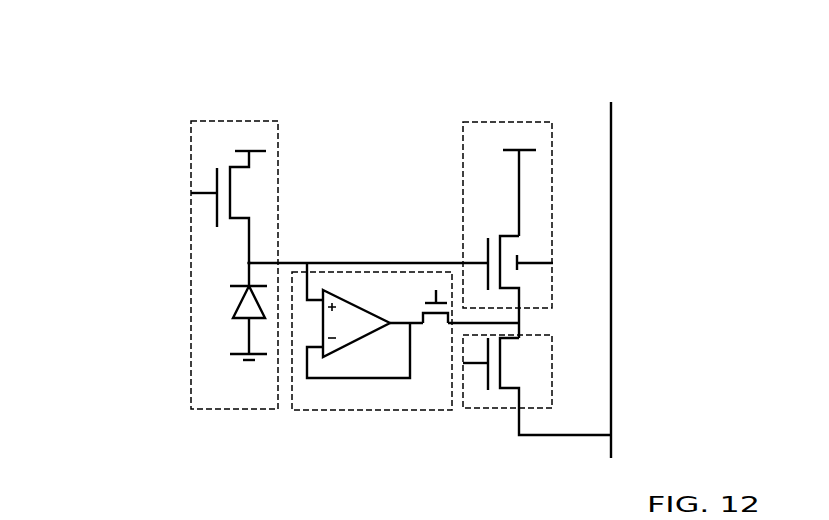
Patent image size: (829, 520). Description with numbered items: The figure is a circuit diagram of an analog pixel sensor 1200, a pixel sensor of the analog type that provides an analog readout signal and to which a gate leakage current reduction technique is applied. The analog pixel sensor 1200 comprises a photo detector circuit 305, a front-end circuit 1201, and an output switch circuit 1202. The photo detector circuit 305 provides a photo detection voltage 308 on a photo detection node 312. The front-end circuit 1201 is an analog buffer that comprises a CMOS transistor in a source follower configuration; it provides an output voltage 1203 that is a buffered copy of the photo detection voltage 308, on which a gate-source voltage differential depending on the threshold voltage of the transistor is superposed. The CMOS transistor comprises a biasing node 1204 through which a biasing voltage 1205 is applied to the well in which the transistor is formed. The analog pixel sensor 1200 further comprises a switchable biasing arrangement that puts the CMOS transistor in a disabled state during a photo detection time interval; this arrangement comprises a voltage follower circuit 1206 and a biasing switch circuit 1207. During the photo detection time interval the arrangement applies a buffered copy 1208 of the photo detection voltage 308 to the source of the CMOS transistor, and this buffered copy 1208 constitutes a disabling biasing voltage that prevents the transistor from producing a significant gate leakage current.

The analog pixel sensor 1200 is at (78, 68).
The photo detector circuit 305 is at (237, 130).
The photo detection node 312 is at (247, 262).
The photo detection voltage 308 is at (368, 248).
The voltage follower circuit 1206 is at (358, 327).
The biasing switch circuit 1207 is at (432, 318).
The buffered copy 1208 is at (412, 305).
The output voltage 1203 is at (509, 324).
The front-end circuit 1201 is at (509, 128).
The biasing node 1204 is at (540, 262).
The biasing voltage 1205 is at (561, 265).
The output switch circuit 1202 is at (588, 371).